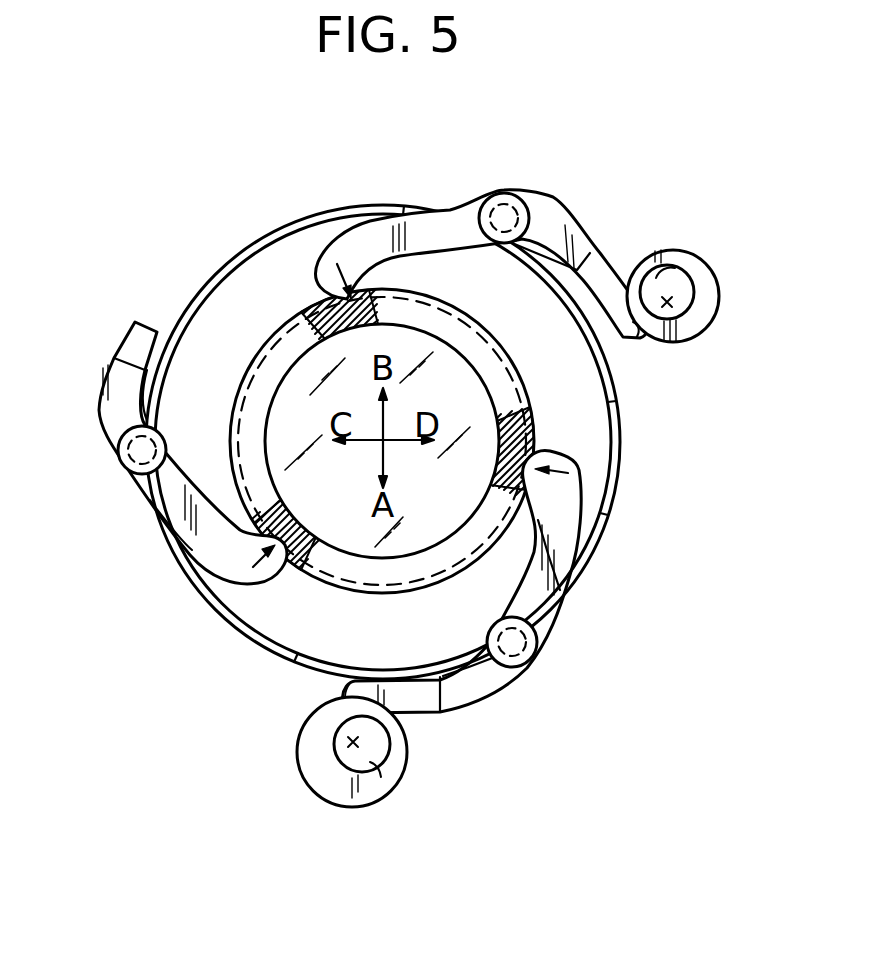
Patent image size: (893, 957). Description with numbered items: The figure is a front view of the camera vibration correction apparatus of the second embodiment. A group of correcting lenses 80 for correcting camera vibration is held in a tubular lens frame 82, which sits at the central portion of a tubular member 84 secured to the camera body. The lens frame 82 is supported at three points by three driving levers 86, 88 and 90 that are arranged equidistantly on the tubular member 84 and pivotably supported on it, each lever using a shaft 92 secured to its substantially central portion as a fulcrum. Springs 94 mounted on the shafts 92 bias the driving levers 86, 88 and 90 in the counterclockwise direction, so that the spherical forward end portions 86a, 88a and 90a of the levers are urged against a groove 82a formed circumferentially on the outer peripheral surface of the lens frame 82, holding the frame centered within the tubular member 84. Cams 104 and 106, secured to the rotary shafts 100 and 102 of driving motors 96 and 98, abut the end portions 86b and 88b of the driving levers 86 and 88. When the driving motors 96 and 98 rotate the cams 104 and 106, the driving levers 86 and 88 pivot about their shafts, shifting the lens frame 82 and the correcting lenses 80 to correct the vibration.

The correcting lenses 80 is at (493, 413).
The lens frame 82 is at (493, 377).
The groove 82a is at (386, 281).
The tubular member 84 is at (622, 432).
The driving lever 86 is at (445, 232).
The spherical forward end portion 86a is at (325, 278).
The end portion 86b is at (637, 325).
The driving lever 88 is at (538, 613).
The spherical forward end portion 88a is at (572, 455).
The end portion 88b is at (345, 700).
The driving lever 90 is at (170, 500).
The spherical forward end portion 90a is at (270, 563).
The shaft 92 is at (510, 205).
The spring 94 is at (540, 228).
The driving motor 96 is at (692, 325).
The driving motor 98 is at (333, 777).
The rotary shaft 100 is at (668, 302).
The rotary shaft 102 is at (352, 748).
The cam 104 is at (680, 282).
The cam 106 is at (367, 772).